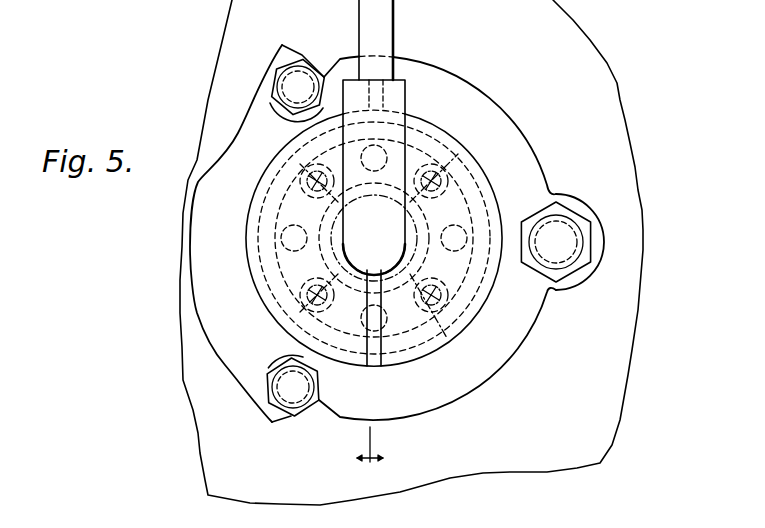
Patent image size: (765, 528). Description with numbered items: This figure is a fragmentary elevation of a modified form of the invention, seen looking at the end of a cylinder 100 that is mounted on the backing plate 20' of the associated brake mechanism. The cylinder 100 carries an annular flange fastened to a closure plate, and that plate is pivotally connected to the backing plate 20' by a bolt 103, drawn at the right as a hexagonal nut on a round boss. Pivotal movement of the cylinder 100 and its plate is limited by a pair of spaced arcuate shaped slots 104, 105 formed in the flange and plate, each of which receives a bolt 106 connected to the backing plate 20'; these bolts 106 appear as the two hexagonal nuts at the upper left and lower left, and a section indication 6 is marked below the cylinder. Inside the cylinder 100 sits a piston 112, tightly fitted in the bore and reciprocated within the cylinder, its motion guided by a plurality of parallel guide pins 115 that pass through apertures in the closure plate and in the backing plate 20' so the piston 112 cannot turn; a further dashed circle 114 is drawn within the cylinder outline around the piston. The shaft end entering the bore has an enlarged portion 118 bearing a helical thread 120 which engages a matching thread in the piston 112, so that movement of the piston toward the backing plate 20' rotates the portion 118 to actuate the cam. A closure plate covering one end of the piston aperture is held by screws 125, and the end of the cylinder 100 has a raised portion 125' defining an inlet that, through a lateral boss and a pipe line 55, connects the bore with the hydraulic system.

The backing plate 20' is at (434, 252).
The shaft 55 is at (393, 36).
The cylinder 100 is at (477, 313).
The bolt 103 is at (565, 212).
The arcuate shaped slot 104 is at (276, 118).
The arcuate shaped slot 105 is at (283, 353).
The bolt 106 is at (307, 65).
The piston 112 is at (489, 166).
The flange circle 114 is at (484, 288).
The guide pin 115 is at (281, 240).
The enlarged portion 118 is at (332, 252).
The helical thread 120 is at (323, 215).
The screw 125 is at (375, 242).
The raised portion 125' is at (398, 223).
The section line 6 is at (370, 455).